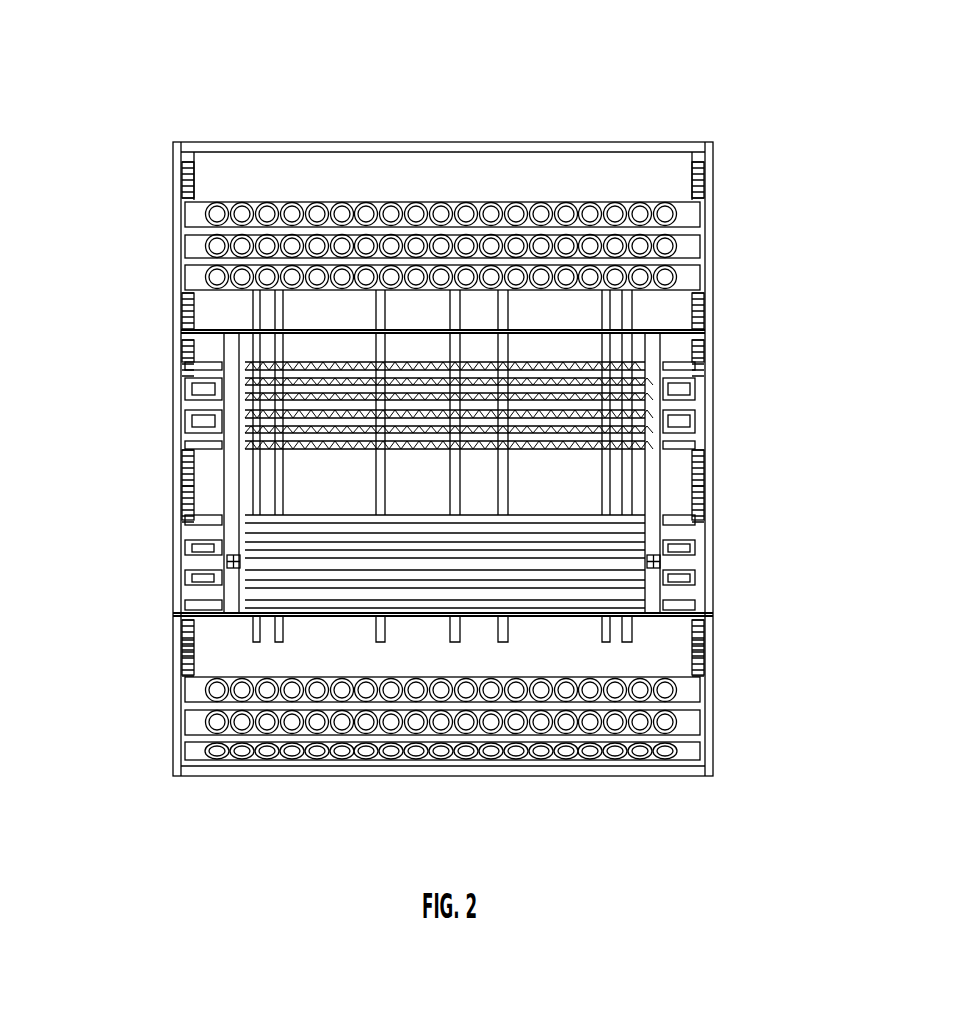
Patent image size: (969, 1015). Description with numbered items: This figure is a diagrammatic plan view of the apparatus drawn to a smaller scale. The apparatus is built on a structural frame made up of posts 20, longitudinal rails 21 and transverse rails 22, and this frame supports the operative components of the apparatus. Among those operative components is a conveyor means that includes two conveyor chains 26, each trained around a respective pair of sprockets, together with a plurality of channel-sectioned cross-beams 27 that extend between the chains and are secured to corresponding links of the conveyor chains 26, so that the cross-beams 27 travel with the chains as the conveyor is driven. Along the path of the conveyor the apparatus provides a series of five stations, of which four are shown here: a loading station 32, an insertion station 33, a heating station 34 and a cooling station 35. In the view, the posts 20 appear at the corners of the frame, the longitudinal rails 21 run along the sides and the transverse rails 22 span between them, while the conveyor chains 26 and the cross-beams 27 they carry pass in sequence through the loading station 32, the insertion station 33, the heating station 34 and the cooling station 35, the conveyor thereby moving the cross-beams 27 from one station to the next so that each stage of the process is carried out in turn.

The post 20 is at (172, 140).
The longitudinal rail 21 is at (231, 472).
The transverse rail 22 is at (318, 141).
The conveyor chain 26 is at (182, 172).
The channel-sectioned cross-beam 27 is at (190, 240).
The loading station 32 is at (466, 170).
The insertion station 33 is at (152, 383).
The heating station 34 is at (170, 572).
The cooling station 35 is at (385, 777).